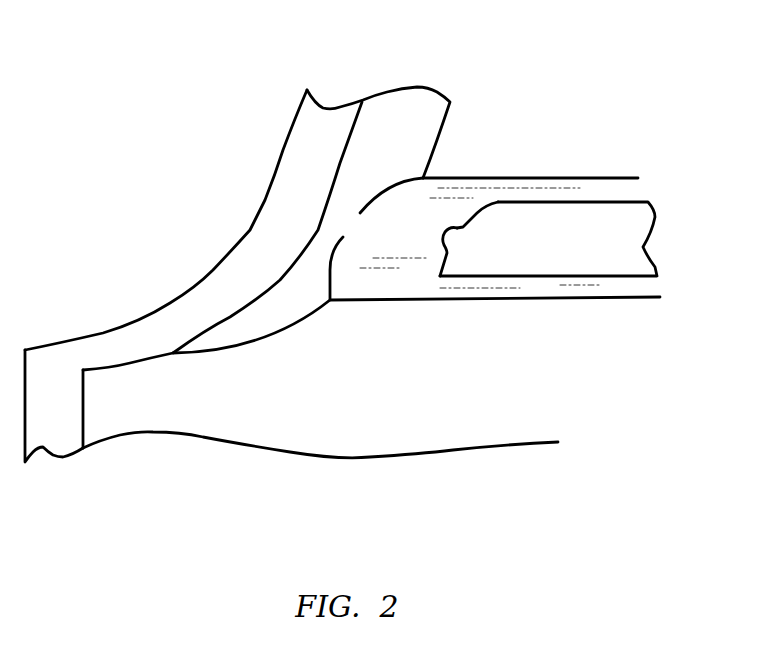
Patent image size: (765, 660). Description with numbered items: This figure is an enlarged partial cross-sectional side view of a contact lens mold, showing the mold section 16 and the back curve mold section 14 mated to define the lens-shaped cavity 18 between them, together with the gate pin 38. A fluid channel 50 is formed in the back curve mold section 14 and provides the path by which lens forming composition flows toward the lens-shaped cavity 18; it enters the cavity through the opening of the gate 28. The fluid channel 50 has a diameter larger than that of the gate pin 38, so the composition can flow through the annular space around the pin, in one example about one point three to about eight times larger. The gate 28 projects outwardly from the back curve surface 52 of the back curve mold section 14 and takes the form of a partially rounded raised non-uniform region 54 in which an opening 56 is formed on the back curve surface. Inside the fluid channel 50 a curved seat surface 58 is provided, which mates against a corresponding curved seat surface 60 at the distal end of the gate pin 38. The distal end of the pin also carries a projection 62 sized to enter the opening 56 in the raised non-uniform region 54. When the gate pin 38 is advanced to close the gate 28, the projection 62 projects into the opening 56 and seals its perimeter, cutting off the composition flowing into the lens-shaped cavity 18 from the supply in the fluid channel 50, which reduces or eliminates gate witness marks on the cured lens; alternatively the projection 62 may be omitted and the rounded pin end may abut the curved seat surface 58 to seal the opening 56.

The back curve mold section 14 is at (473, 428).
The mold section 16 is at (137, 320).
The lens-shaped cavity 18 is at (393, 120).
The gate 28 is at (362, 217).
The gate pin 38 is at (612, 218).
The fluid channel 50 is at (647, 285).
The back curve surface 52 is at (280, 330).
The raised non-uniform region 54 is at (370, 209).
The opening 56 is at (350, 230).
The curved seat surface 58 is at (335, 270).
The curved seat surface 60 is at (490, 213).
The projection 62 is at (440, 238).